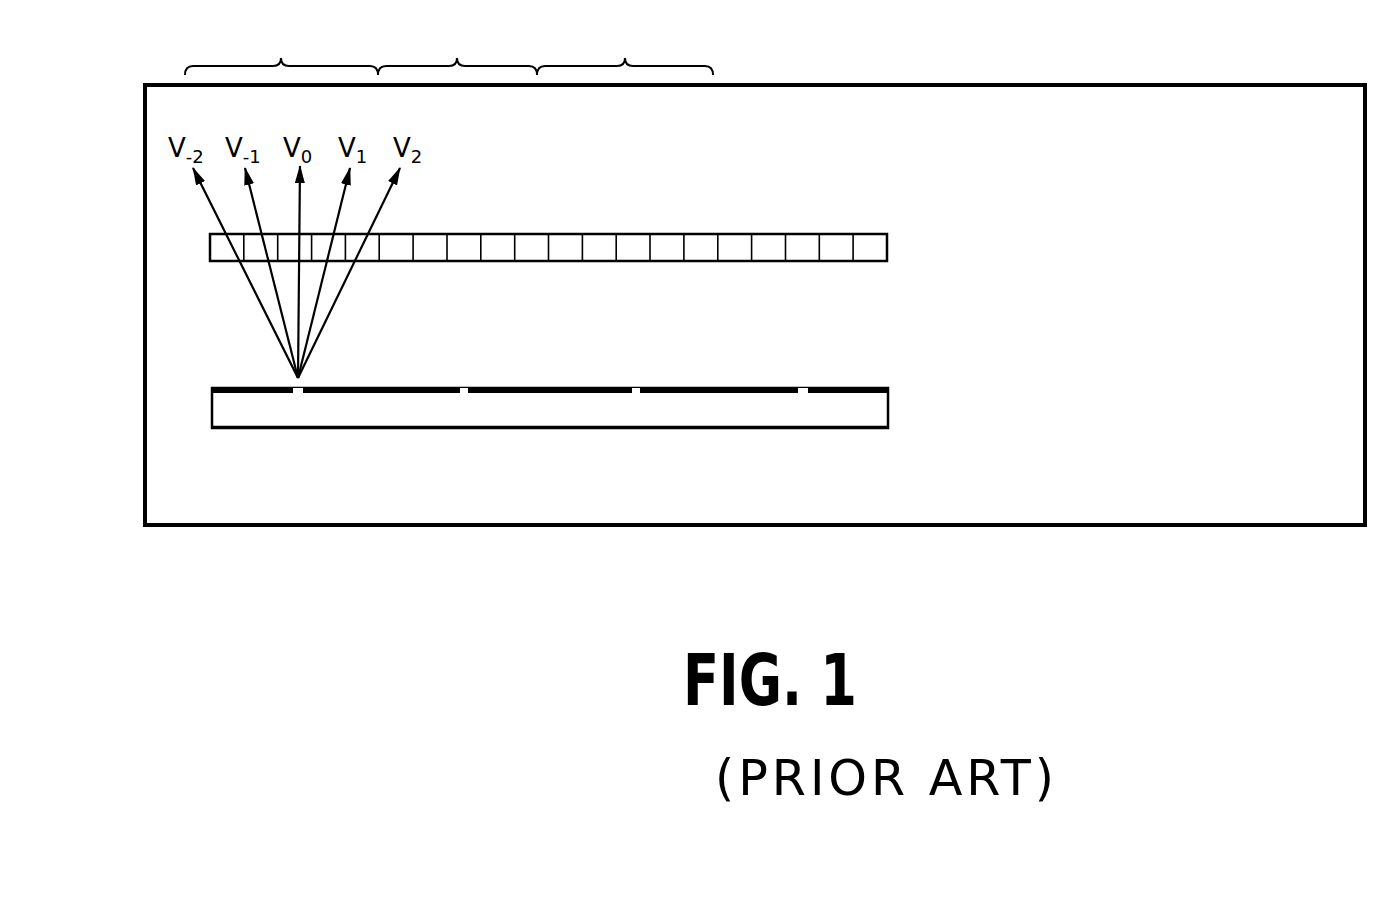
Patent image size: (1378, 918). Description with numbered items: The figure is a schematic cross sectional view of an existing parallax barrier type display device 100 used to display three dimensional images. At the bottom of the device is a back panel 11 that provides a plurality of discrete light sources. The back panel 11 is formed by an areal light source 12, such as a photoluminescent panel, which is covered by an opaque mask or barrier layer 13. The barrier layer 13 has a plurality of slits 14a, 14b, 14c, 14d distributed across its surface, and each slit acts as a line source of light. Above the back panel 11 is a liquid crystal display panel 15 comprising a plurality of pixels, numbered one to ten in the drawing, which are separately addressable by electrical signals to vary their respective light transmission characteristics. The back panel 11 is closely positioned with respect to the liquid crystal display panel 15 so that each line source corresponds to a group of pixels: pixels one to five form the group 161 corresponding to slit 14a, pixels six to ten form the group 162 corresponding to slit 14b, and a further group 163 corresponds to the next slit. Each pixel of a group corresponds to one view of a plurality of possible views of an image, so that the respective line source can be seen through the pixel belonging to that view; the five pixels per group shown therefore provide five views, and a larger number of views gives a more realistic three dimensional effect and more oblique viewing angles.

The display device 100 is at (907, 200).
The liquid crystal display panel 15 is at (190, 249).
The back panel 11 is at (190, 410).
The areal light source 12 is at (320, 430).
The barrier layer 13 is at (870, 386).
The slit 14a is at (270, 372).
The slit 14b is at (458, 372).
The slit 14c is at (631, 372).
The slit 14d is at (800, 372).
The group of pixels 161 is at (281, 45).
The group of pixels 162 is at (457, 45).
The group of pixels 163 is at (625, 45).